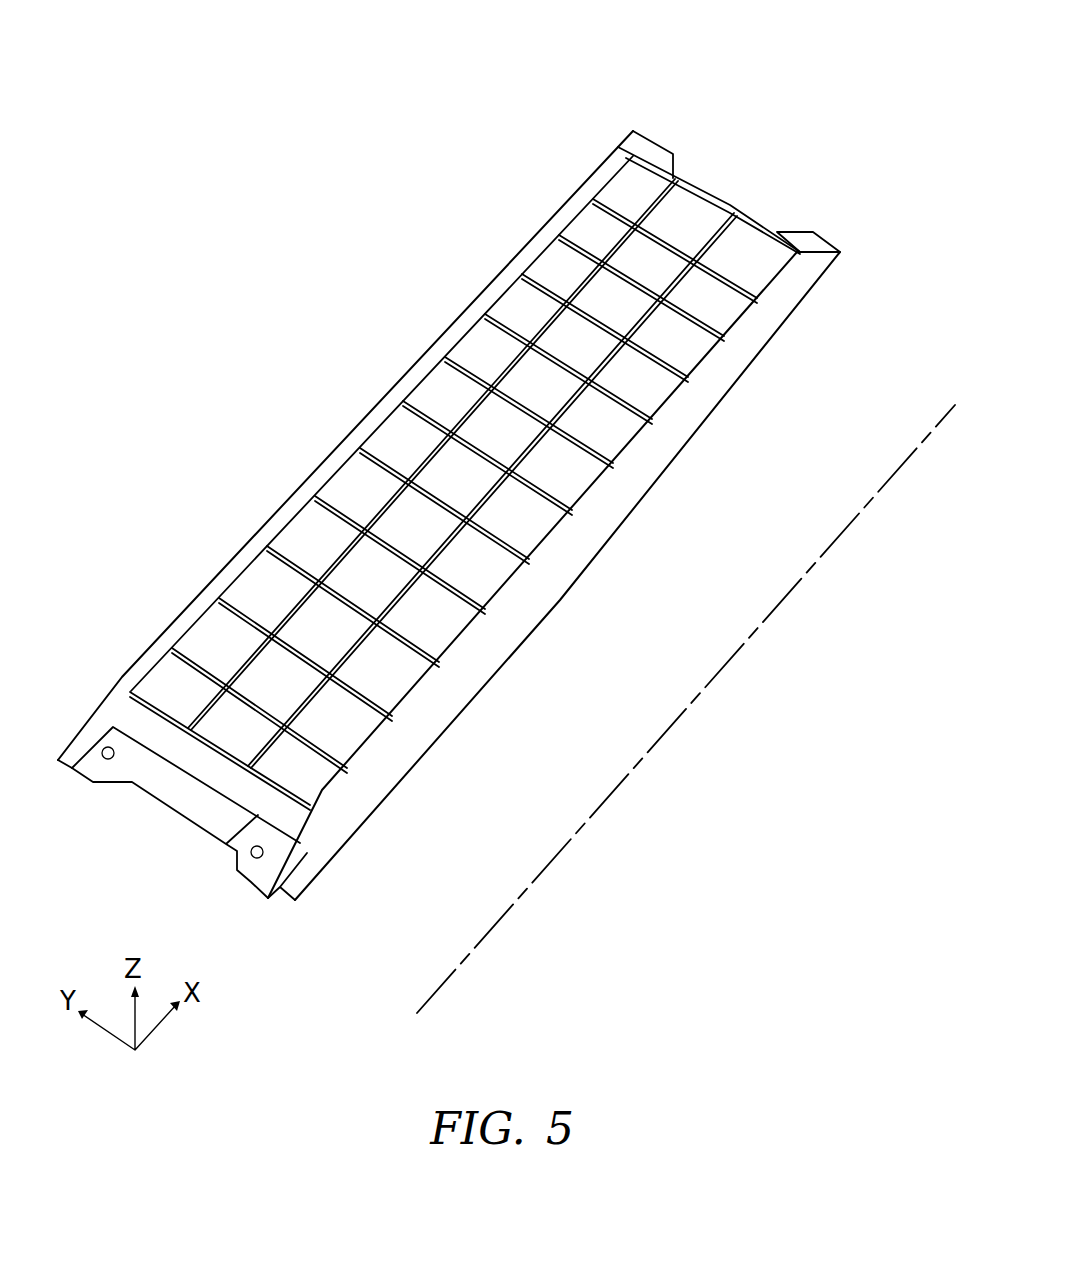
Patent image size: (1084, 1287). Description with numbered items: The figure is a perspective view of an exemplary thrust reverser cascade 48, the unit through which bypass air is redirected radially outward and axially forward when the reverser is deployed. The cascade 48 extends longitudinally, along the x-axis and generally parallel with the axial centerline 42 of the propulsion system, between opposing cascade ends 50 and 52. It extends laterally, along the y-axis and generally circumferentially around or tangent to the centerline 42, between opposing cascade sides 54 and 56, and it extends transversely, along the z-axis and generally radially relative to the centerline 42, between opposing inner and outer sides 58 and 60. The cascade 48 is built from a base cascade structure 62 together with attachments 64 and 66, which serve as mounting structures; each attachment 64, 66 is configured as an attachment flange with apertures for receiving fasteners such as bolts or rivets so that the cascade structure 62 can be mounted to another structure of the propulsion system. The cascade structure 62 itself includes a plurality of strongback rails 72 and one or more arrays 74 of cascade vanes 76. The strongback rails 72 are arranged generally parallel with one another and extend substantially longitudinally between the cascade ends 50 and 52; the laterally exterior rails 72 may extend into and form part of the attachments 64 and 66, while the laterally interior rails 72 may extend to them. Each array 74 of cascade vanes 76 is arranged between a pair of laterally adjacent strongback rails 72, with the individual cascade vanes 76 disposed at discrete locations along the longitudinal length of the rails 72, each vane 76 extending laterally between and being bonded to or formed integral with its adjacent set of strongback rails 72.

The axial centerline 42 is at (800, 590).
The thrust reverser cascade 48 is at (463, 529).
The cascade end 50 is at (254, 895).
The cascade end 52 is at (830, 240).
The cascade side 54 is at (780, 277).
The cascade side 56 is at (582, 183).
The inner side 58 is at (775, 370).
The outer side 60 is at (730, 308).
The base cascade structure 62 is at (313, 444).
The attachment 64 is at (161, 817).
The attachment 66 is at (712, 184).
The strongback rails 72 is at (252, 658).
The arrays of cascade vanes 74 is at (210, 733).
The cascade vanes 76 is at (587, 355).